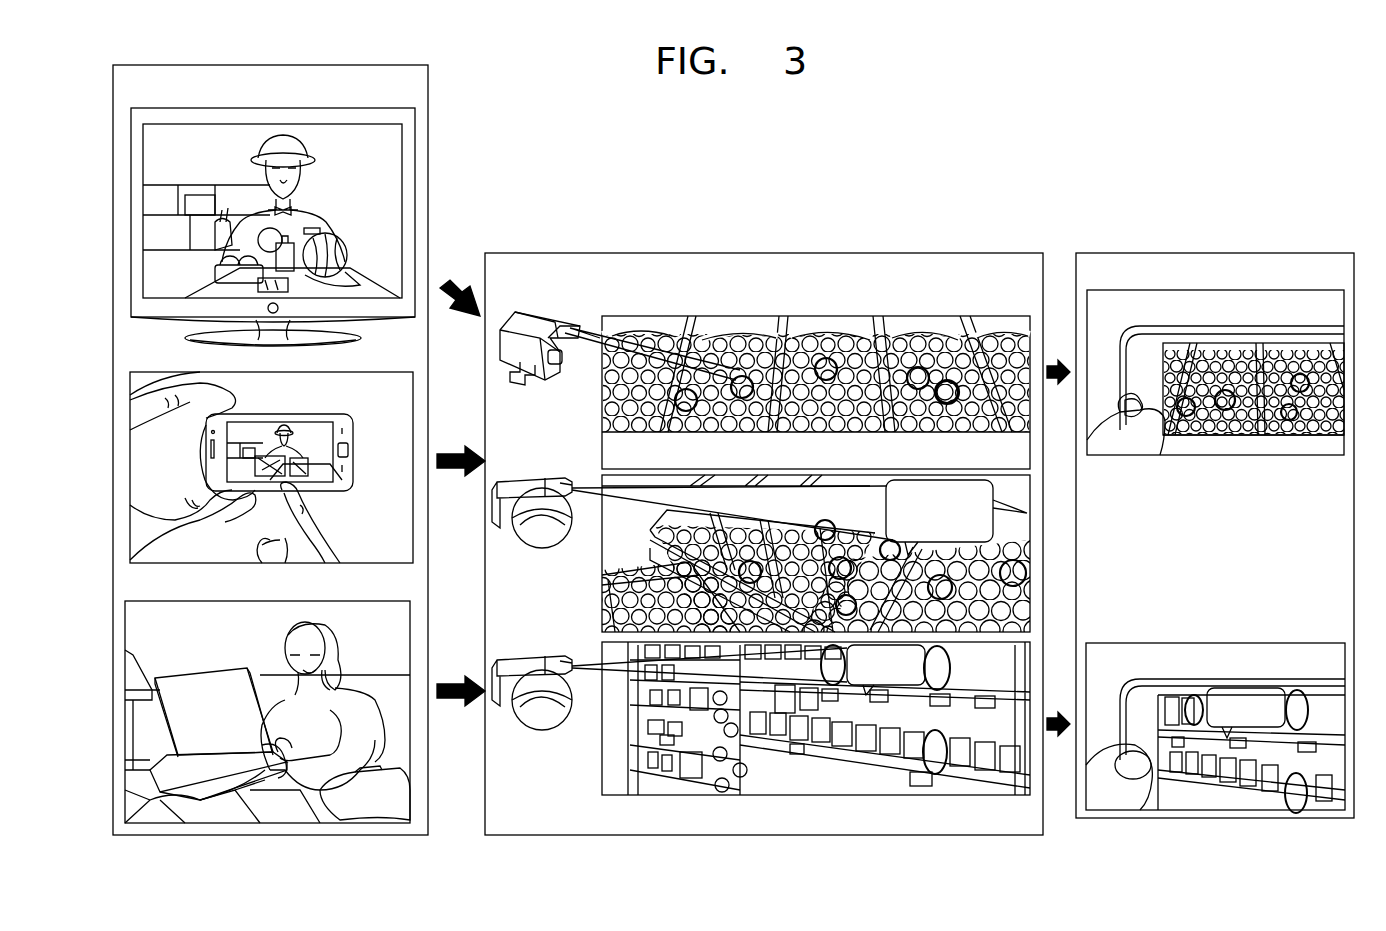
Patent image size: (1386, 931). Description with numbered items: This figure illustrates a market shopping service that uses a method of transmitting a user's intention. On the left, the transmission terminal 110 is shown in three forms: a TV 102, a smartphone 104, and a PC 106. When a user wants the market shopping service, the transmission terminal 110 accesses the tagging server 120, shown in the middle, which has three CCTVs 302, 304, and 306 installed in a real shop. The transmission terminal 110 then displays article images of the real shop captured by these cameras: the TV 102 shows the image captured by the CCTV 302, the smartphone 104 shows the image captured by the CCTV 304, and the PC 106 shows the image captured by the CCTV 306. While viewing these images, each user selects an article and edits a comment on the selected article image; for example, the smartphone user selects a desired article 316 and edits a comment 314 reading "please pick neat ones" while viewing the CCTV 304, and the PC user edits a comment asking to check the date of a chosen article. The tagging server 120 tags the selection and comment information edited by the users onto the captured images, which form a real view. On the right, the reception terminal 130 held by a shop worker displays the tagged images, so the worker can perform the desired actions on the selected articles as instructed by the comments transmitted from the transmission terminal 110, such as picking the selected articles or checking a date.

The transmission terminal 110 is at (272, 65).
The TV 102 is at (340, 107).
The smartphone 104 is at (338, 372).
The PC 106 is at (335, 601).
The tagging server 120 is at (806, 529).
The reception terminal 130 is at (1215, 520).
The CCTV 302 is at (537, 316).
The CCTV 304 is at (532, 478).
The CCTV 306 is at (534, 656).
The comment 314 is at (990, 520).
The desired article 316 is at (1025, 565).